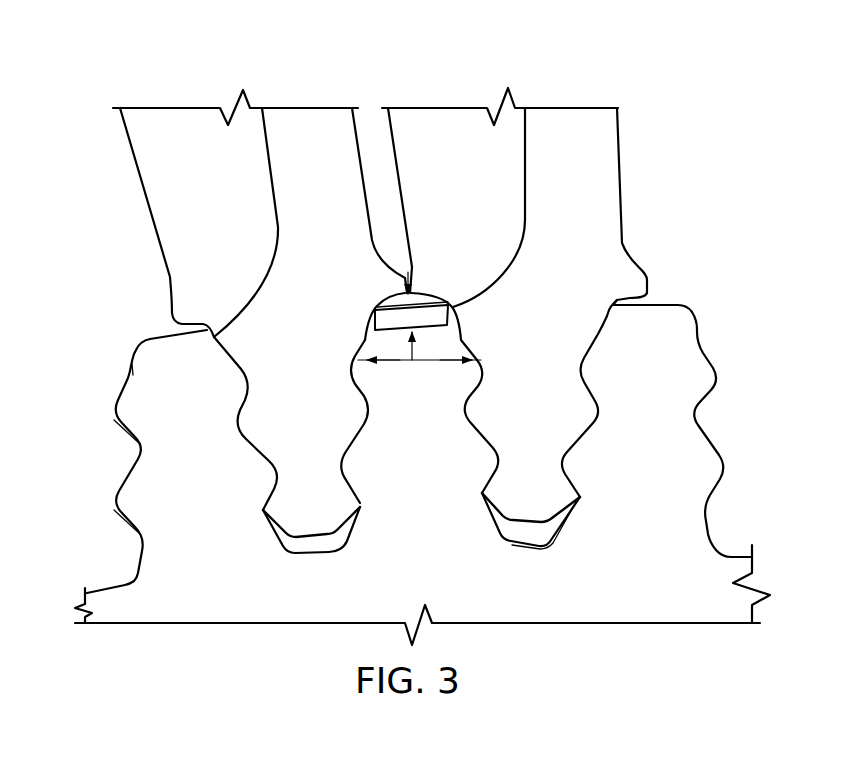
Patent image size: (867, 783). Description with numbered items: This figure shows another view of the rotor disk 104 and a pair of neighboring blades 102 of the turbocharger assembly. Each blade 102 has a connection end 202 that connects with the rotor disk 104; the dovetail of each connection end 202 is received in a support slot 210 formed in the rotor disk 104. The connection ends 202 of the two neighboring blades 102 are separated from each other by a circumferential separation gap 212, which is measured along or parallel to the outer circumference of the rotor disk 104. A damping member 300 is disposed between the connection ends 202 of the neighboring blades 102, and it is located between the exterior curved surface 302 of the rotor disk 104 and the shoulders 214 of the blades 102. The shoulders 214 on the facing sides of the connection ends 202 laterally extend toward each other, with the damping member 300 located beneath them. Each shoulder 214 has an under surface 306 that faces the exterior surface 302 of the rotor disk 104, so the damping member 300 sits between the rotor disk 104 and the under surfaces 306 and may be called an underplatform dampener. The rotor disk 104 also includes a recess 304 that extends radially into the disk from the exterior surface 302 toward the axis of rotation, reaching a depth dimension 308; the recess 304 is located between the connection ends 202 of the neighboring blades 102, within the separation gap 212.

The blade 102 is at (310, 96).
The rotor disk 104 is at (677, 594).
The connection end 202 is at (140, 170).
The support slot 210 is at (306, 553).
The circumferential separation gap 212 is at (412, 363).
The shoulder 214 is at (158, 301).
The damping member 300 is at (468, 311).
The exterior curved surface 302 is at (141, 327).
The recess 304 is at (372, 318).
The under surface 306 is at (382, 314).
The depth dimension 308 is at (420, 356).